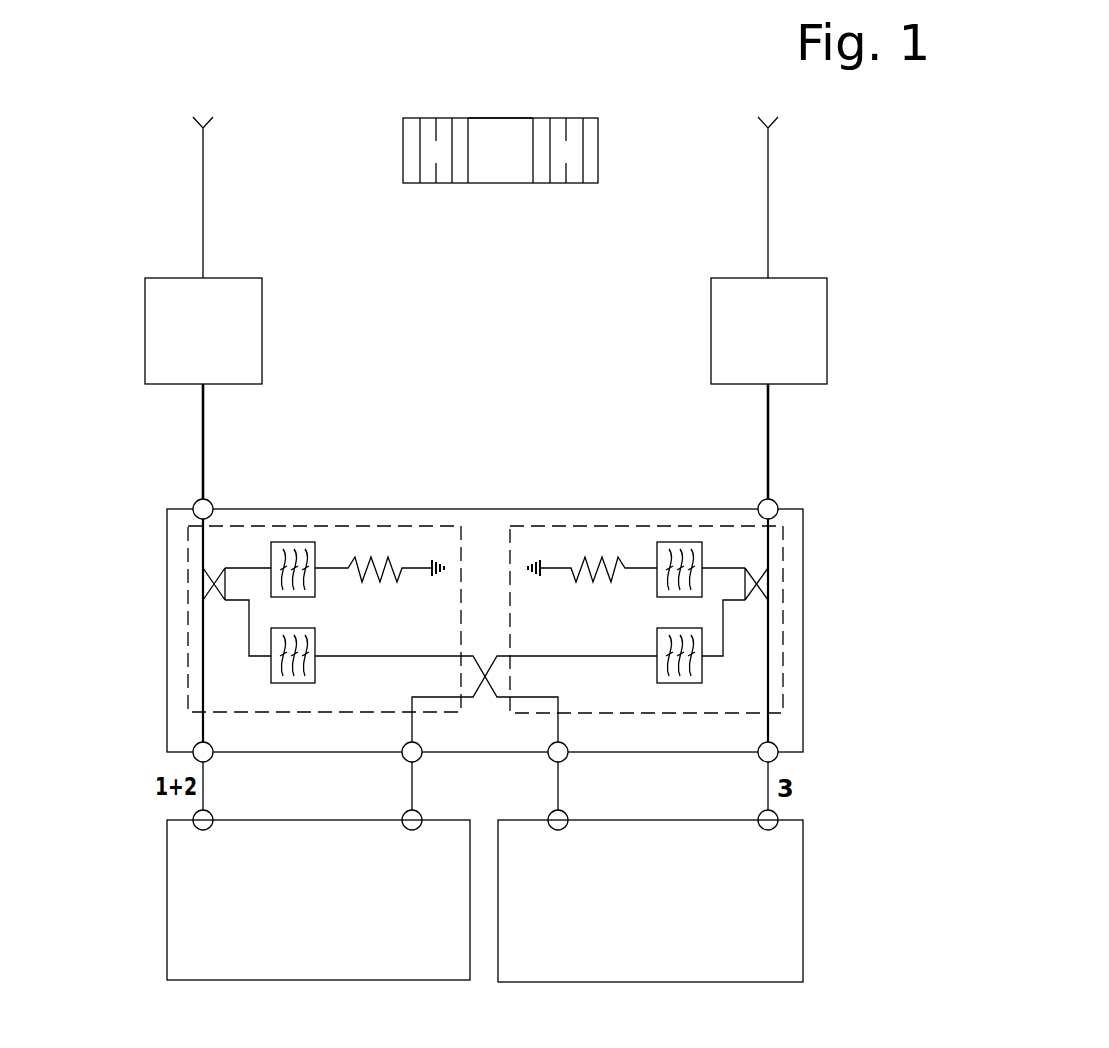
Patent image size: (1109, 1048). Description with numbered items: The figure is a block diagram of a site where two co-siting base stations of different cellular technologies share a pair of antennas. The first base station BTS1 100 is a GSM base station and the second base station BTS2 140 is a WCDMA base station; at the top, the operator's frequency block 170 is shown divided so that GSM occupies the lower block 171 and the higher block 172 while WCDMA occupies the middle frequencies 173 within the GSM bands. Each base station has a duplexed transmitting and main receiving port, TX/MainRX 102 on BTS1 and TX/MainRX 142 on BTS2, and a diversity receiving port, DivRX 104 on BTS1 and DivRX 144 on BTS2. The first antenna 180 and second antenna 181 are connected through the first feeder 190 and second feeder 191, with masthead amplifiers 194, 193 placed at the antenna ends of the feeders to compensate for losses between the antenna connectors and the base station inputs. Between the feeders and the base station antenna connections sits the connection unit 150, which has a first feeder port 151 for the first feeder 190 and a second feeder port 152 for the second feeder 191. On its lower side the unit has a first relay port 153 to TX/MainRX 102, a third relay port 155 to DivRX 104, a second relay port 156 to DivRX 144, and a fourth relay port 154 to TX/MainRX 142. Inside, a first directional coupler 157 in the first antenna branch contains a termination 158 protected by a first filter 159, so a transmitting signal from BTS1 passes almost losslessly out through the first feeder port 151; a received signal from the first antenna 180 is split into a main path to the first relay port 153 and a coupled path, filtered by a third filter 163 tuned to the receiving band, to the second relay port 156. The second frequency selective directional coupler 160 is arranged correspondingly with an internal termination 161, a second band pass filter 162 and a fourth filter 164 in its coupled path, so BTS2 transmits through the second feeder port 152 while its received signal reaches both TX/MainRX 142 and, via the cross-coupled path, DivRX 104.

The first base station BTS1 100 is at (167, 903).
The transmitting and main receiving port TX/MainRX 102 is at (212, 813).
The diversity receiving port DivRX 104 is at (404, 813).
The second base station BTS2 140 is at (803, 900).
The transmitting and main receiving port TX/MainRX 142 is at (760, 813).
The diversity receiving port DivRX 144 is at (567, 813).
The connection unit 150 is at (805, 553).
The first feeder port 151 is at (199, 502).
The second feeder port 152 is at (774, 501).
The first relay port 153 is at (212, 761).
The fourth relay port 154 is at (760, 761).
The third relay port 155 is at (404, 761).
The second relay port 156 is at (567, 761).
The first directional coupler 157 is at (188, 614).
The termination 158 is at (368, 558).
The first filter 159 is at (322, 583).
The second frequency selective directional coupler 160 is at (783, 613).
The internal termination 161 is at (592, 557).
The second band pass filter 162 is at (650, 583).
The third filter 163 is at (322, 643).
The fourth filter 164 is at (650, 643).
The frequency block 170 is at (502, 185).
The block 1 171 is at (413, 120).
The block 2 172 is at (590, 120).
The frequencies 3 173 is at (516, 128).
The first antenna 180 is at (203, 215).
The second antenna 181 is at (778, 214).
The first feeder 190 is at (203, 428).
The second feeder 191 is at (770, 428).
The masthead amplifier 193 is at (827, 332).
The masthead amplifier 194 is at (145, 333).